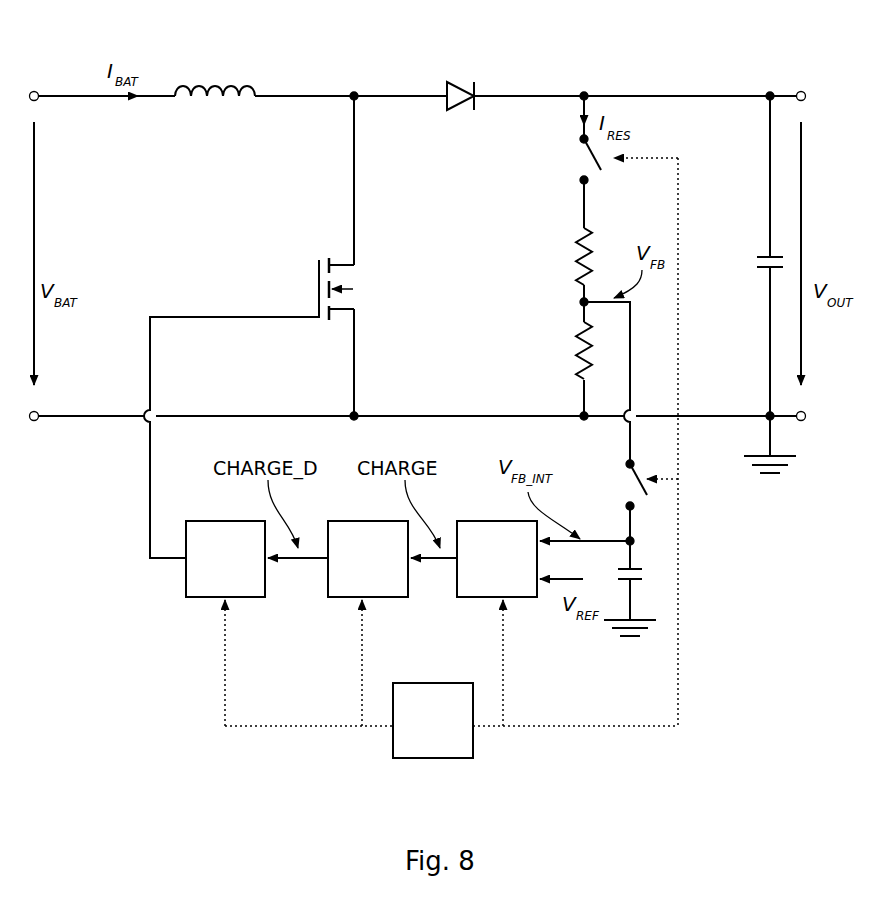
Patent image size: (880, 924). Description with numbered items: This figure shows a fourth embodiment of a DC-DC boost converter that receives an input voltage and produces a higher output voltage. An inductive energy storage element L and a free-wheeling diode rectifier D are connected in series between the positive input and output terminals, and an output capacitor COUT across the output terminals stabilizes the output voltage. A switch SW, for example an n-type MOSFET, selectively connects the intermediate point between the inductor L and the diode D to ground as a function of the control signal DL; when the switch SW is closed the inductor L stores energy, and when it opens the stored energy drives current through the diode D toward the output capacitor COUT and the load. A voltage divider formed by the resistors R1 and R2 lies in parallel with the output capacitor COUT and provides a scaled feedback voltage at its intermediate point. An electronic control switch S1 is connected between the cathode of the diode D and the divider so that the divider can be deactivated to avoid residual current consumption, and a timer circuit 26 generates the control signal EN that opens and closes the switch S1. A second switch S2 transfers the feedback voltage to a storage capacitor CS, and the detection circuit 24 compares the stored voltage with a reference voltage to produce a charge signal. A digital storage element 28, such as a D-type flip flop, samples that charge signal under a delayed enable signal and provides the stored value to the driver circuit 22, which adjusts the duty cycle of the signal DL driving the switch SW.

The driver circuit 22 is at (239, 569).
The detection circuit 24 is at (510, 569).
The timer circuit 26 is at (446, 732).
The digital storage element 28 is at (381, 569).
The inductive energy storage element L is at (242, 70).
The diode rectifier D is at (462, 80).
The switch SW is at (316, 257).
The control signal DL is at (218, 316).
The electronic control switch S1 is at (566, 147).
The second switch S2 is at (622, 482).
The first resistor R1 is at (572, 253).
The second resistor R2 is at (572, 353).
The storage capacitor CS is at (654, 563).
The output capacitor COUT is at (758, 250).
The control signal EN is at (681, 157).